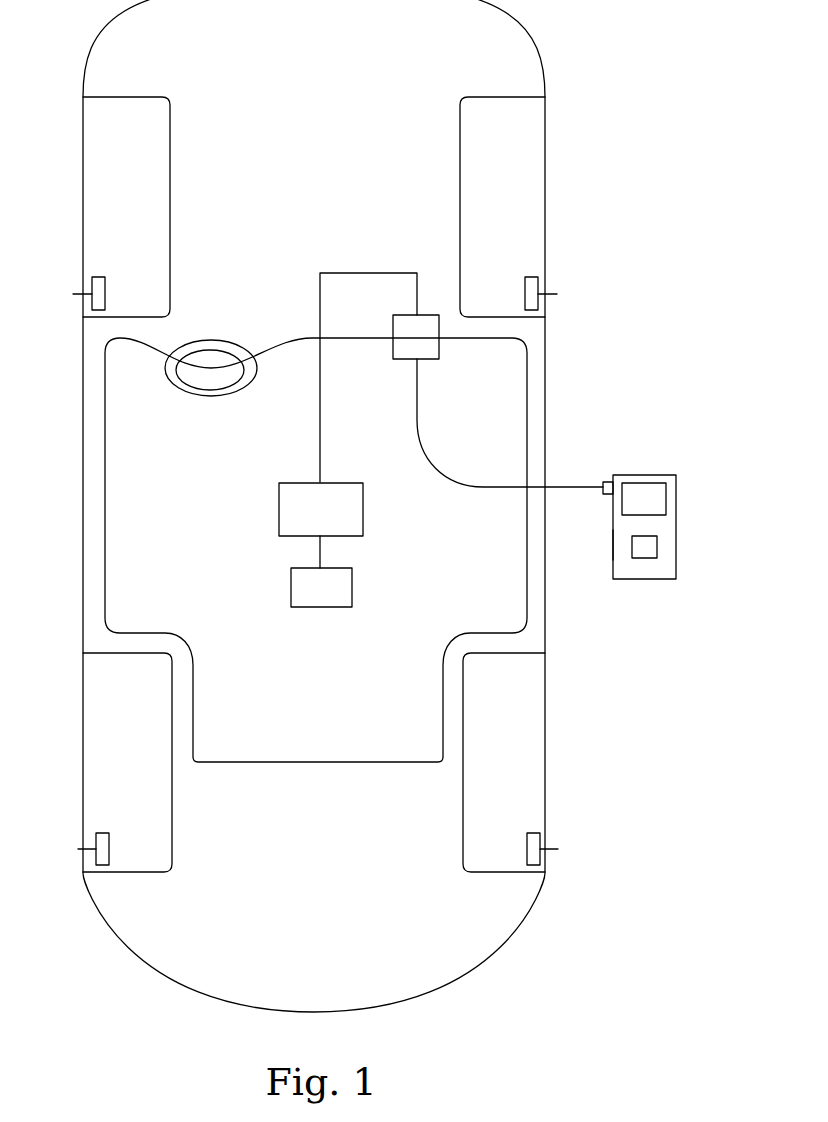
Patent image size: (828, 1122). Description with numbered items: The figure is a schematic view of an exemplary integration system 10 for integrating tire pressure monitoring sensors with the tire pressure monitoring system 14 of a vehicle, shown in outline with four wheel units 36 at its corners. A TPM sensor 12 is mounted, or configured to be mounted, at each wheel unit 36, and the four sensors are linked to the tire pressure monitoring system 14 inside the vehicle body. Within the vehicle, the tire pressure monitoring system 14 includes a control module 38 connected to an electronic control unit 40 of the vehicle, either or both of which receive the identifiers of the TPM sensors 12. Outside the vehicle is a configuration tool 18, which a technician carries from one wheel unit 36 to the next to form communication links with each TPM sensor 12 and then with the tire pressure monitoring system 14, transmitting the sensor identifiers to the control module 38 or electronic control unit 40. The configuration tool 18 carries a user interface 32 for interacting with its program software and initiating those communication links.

The integration system 10 is at (678, 200).
The TPM sensor 12 is at (105, 294).
The tire pressure monitoring system 14 is at (198, 569).
The configuration tool 18 is at (647, 475).
The user interface 32 is at (608, 555).
The wheel unit 36 is at (83, 201).
The control module 38 is at (291, 587).
The electronic control unit 40 is at (279, 508).